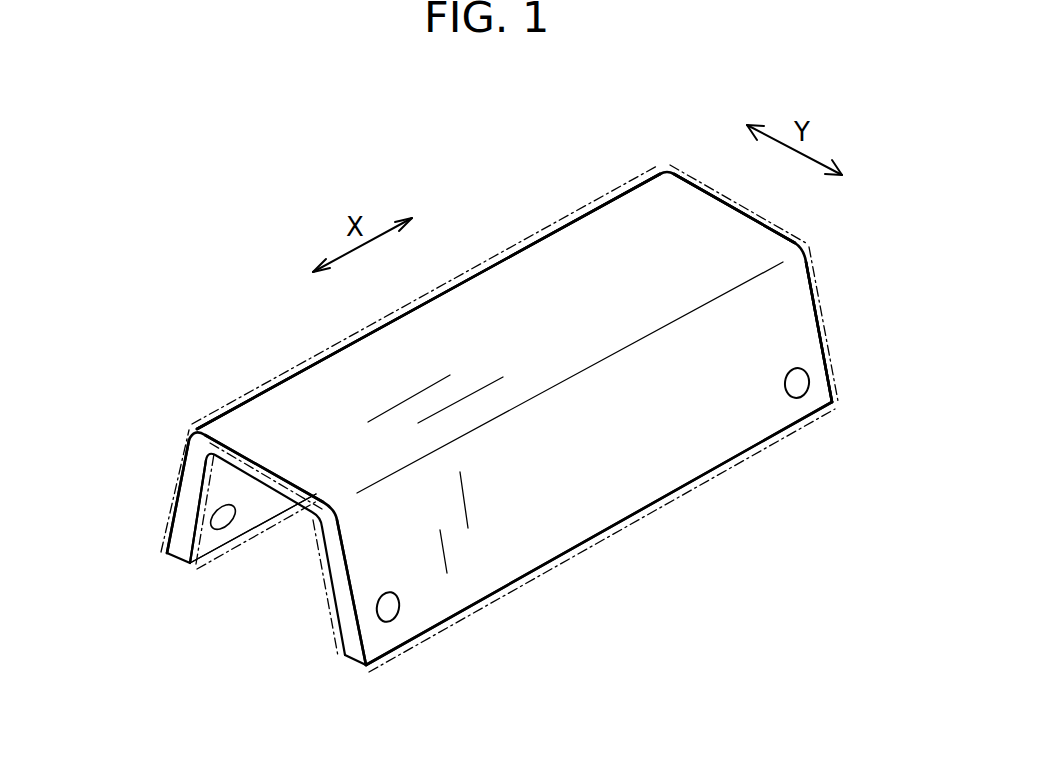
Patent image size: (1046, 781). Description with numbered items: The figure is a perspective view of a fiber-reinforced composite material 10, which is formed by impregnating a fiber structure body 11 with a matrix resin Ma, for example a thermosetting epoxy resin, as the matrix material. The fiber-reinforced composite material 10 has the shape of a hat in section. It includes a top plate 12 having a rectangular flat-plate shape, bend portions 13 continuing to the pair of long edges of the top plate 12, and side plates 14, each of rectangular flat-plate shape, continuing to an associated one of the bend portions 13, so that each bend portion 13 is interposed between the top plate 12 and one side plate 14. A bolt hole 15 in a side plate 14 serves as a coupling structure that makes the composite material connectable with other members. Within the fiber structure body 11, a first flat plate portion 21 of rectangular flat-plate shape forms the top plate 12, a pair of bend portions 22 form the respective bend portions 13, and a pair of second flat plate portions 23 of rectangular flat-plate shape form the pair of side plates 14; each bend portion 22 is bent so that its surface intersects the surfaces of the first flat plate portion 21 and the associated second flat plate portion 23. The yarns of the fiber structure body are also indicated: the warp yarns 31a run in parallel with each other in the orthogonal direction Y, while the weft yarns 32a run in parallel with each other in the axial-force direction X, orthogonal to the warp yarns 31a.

The fiber-reinforced composite material 10 is at (822, 226).
The fiber structure body 11 is at (583, 523).
The top plate 12 is at (443, 290).
The bend portions 13 is at (603, 200).
The side plates 14 is at (183, 470).
The bolt hole 15 is at (400, 612).
The first flat plate portion 21 is at (727, 217).
The bend portions 22 is at (340, 350).
The second flat plate portions 23 is at (180, 532).
The warp yarns 31a is at (435, 383).
The weft yarns 32a is at (465, 497).
The matrix resin Ma is at (814, 273).